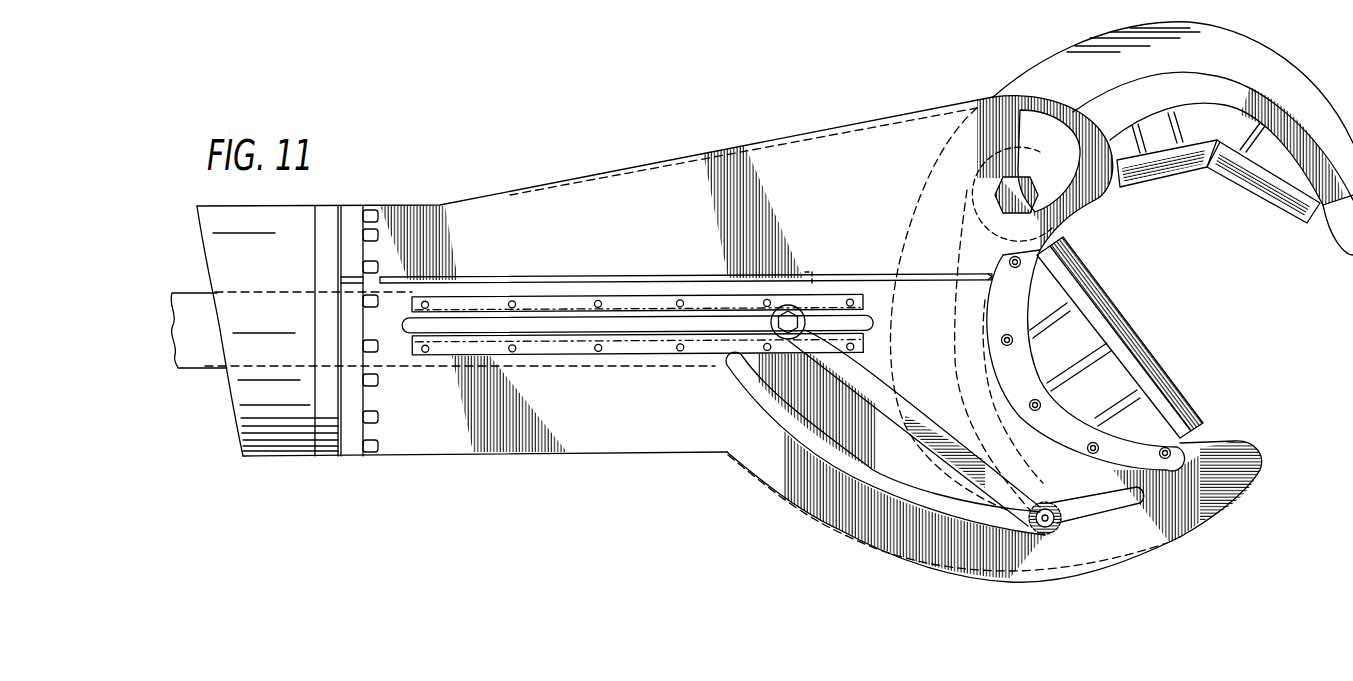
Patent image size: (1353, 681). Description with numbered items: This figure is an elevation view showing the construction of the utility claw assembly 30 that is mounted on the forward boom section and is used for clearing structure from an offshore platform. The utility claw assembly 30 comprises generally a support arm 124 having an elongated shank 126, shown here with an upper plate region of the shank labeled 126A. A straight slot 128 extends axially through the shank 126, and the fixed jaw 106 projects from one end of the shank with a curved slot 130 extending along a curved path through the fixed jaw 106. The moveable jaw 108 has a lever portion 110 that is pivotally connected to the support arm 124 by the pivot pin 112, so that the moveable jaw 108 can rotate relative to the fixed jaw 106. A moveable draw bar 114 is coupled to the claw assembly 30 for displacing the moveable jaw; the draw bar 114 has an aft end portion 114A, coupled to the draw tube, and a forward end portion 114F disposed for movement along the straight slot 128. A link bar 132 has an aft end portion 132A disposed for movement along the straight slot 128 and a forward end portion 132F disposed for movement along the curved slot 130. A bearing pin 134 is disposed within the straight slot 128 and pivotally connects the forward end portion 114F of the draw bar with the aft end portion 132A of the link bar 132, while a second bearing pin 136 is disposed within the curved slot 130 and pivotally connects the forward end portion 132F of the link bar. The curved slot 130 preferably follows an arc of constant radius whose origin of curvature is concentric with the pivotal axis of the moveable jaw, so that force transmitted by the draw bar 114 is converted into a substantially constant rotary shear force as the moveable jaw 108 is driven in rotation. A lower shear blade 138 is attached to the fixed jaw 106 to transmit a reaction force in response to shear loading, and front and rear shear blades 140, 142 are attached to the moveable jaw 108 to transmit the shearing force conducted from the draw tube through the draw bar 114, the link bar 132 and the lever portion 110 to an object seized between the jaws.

The utility claw assembly 30 is at (1000, 82).
The fixed jaw 106 is at (1198, 528).
The moveable jaw 108 is at (1287, 63).
The lever portion 110 is at (1010, 520).
The pivot pin 112 is at (1053, 203).
The draw bar 114 is at (668, 366).
The aft end portion 114A is at (192, 292).
The forward end portion 114F is at (810, 280).
The support arm 124 is at (568, 453).
The elongated shank 126 is at (471, 197).
The top plate portion 126A is at (743, 97).
The straight slot 128 is at (622, 320).
The curved slot 130 is at (835, 475).
The link bar 132 is at (913, 407).
The aft end portion 132A is at (800, 347).
The forward end portion 132F is at (1033, 497).
The bearing pin 134 is at (788, 305).
The bearing pin 136 is at (1060, 530).
The shear blade 138 is at (1133, 317).
The front shear blade 140 is at (1150, 187).
The rear shear blade 142 is at (1250, 193).